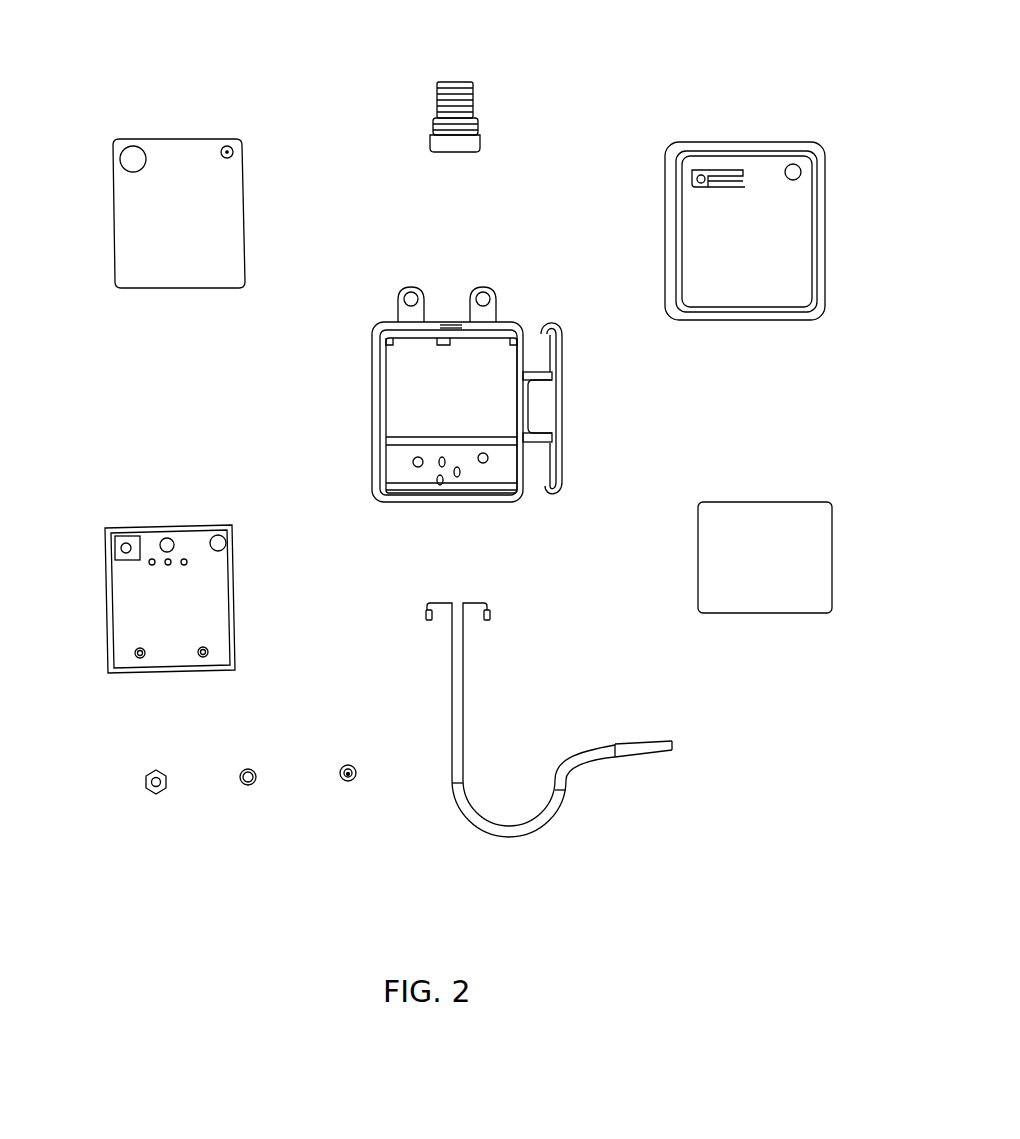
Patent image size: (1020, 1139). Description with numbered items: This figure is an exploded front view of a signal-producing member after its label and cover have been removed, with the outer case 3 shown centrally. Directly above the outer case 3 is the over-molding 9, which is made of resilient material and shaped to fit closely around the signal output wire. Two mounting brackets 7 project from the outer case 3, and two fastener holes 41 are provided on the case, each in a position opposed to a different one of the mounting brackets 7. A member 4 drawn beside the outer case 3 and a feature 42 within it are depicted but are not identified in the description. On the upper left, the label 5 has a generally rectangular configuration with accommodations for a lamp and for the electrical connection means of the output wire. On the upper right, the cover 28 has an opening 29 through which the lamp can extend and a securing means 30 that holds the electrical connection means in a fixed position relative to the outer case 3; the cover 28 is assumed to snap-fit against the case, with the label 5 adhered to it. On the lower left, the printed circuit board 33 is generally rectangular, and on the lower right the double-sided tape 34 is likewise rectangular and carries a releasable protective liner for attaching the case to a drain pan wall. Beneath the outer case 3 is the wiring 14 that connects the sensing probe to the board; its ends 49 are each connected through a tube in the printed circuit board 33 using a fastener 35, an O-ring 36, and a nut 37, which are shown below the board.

The outer case 3 is at (422, 398).
The mounting clip 4 is at (557, 408).
The label 5 is at (196, 260).
The mounting brackets 7 is at (484, 298).
The over-molding 9 is at (472, 92).
The wiring 14 is at (580, 720).
The front cover 28 is at (765, 230).
The opening 29 is at (798, 168).
The securing means 30 is at (728, 176).
The printed circuit board 33 is at (215, 602).
The double-sided tape 34 is at (787, 580).
The fastener 35 is at (248, 800).
The O-ring 36 is at (353, 793).
The nut 37 is at (152, 805).
The fastener holes 41 is at (481, 463).
The cavity 42 is at (427, 403).
The ends of wiring 49 is at (437, 618).